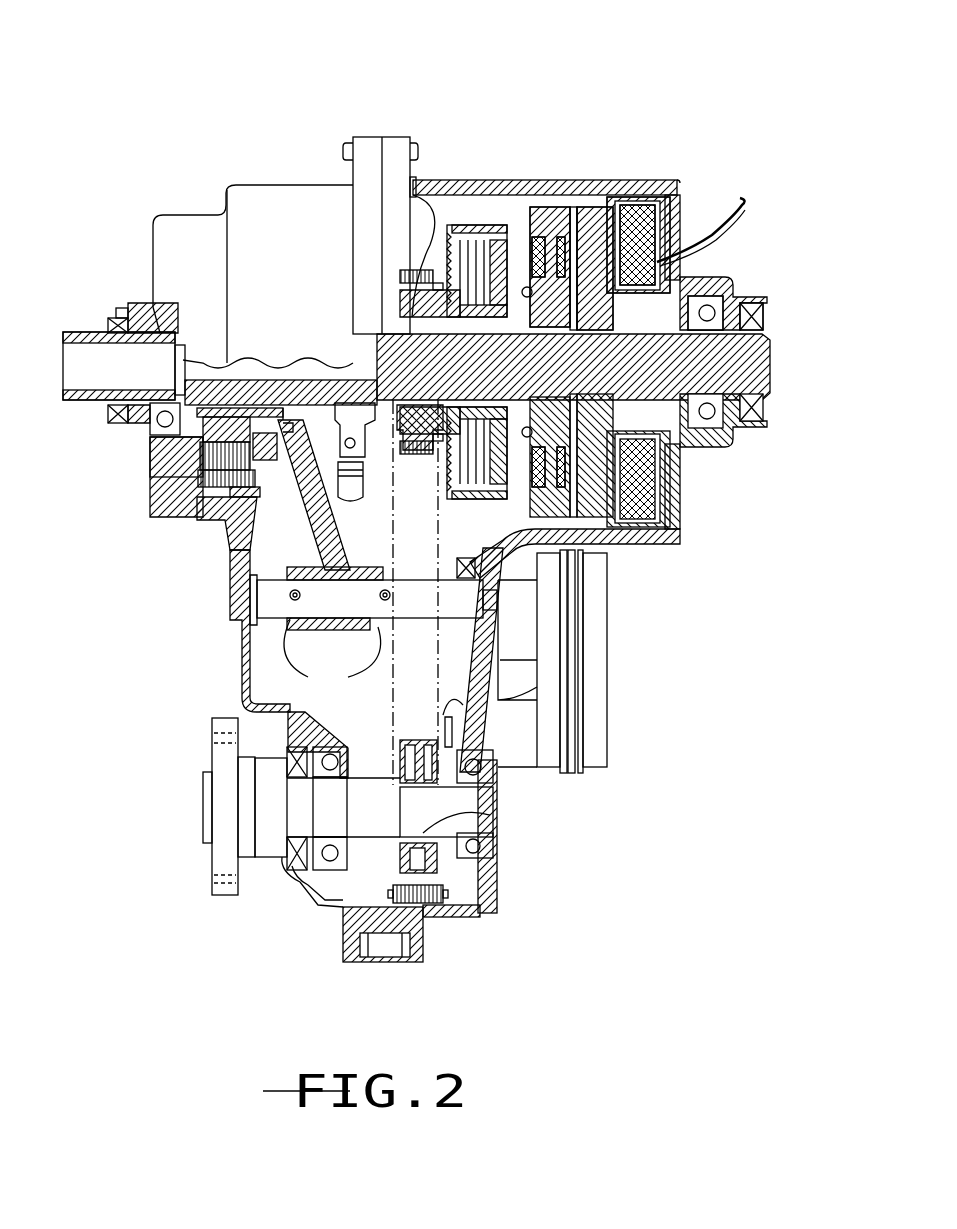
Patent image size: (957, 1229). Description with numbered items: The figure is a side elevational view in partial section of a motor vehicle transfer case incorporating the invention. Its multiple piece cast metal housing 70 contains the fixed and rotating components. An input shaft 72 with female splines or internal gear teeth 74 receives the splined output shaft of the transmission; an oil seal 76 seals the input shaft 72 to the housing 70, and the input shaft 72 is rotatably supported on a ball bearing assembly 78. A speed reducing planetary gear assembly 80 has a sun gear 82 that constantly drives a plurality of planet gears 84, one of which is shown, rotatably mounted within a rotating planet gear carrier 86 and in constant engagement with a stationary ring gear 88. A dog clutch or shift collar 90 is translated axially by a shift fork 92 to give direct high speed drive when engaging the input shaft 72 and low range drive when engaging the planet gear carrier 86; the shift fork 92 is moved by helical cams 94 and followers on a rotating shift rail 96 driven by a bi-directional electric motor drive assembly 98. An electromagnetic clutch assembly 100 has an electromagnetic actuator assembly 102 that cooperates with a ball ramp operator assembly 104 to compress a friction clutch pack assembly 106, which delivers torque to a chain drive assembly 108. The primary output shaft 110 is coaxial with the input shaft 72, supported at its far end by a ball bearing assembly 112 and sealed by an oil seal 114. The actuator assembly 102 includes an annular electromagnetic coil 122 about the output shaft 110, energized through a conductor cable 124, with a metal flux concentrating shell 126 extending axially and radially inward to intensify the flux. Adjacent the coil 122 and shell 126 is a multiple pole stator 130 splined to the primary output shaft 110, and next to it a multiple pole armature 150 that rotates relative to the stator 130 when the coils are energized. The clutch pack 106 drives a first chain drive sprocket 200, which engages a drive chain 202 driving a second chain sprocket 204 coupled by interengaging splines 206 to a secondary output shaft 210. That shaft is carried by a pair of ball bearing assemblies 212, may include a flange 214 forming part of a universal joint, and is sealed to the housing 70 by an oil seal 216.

The housing 70 is at (278, 212).
The input shaft 72 is at (66, 300).
The female splines or internal gear teeth 74 is at (85, 333).
The oil seal 76 is at (107, 412).
The ball bearing assembly 78 is at (160, 425).
The speed reducing planetary gear assembly 80 is at (363, 607).
The sun gear 82 is at (230, 423).
The planet gears 84 is at (203, 477).
The planet gear carrier 86 is at (148, 445).
The ring gear 88 is at (228, 535).
The dog clutch or shift collar 90 is at (307, 430).
The shift fork 92 is at (310, 546).
The helical cams 94 is at (332, 656).
The shift rail 96 is at (418, 597).
The bi-directional electric motor drive assembly 98 is at (592, 618).
The electromagnetic clutch assembly 100 is at (596, 298).
The electromagnetic actuator assembly 102 is at (641, 163).
The ball ramp operator assembly 104 is at (533, 162).
The friction clutch pack assembly 106 is at (465, 158).
The chain drive assembly 108 is at (427, 133).
The primary output shaft 110 is at (770, 378).
The ball bearing assembly 112 is at (707, 297).
The oil seal 114 is at (768, 322).
The electromagnetic coil 122 is at (648, 212).
The conductor cable 124 is at (718, 225).
The flux concentrating shell 126 is at (660, 262).
The multiple pole stator 130 is at (683, 453).
The multiple pole armature 150 is at (532, 513).
The first chain drive sprocket 200 is at (413, 430).
The drive chain 202 is at (437, 920).
The second chain sprocket 204 is at (430, 873).
The interengaging splines 206 is at (423, 815).
The secondary output shaft 210 is at (268, 825).
The ball bearing assemblies 212 is at (493, 798).
The flange 214 is at (215, 815).
The oil seal 216 is at (275, 858).